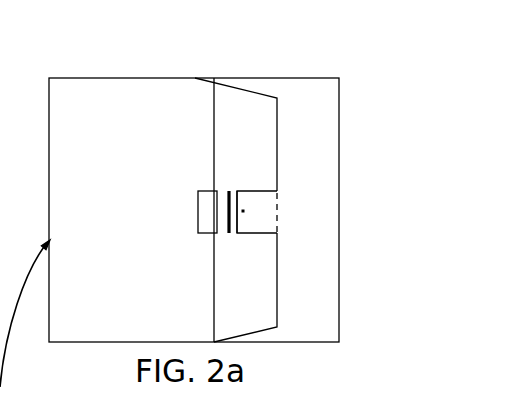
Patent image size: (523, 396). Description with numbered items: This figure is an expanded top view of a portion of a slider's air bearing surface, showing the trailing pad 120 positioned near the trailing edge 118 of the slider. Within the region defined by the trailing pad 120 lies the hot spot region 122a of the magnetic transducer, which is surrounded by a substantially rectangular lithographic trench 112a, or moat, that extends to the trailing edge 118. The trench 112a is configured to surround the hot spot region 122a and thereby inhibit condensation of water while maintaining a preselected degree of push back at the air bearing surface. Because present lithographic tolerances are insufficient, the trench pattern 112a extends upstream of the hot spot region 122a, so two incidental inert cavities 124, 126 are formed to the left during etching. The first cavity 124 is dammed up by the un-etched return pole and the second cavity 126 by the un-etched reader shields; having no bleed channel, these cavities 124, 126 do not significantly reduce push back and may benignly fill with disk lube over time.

The trailing edge 118 is at (277, 130).
The trailing pad 120 is at (237, 102).
The hot spot region 122a is at (243, 211).
The trench 112a is at (246, 191).
The inert cavity 126 is at (204, 209).
The inert cavity 124 is at (229, 233).